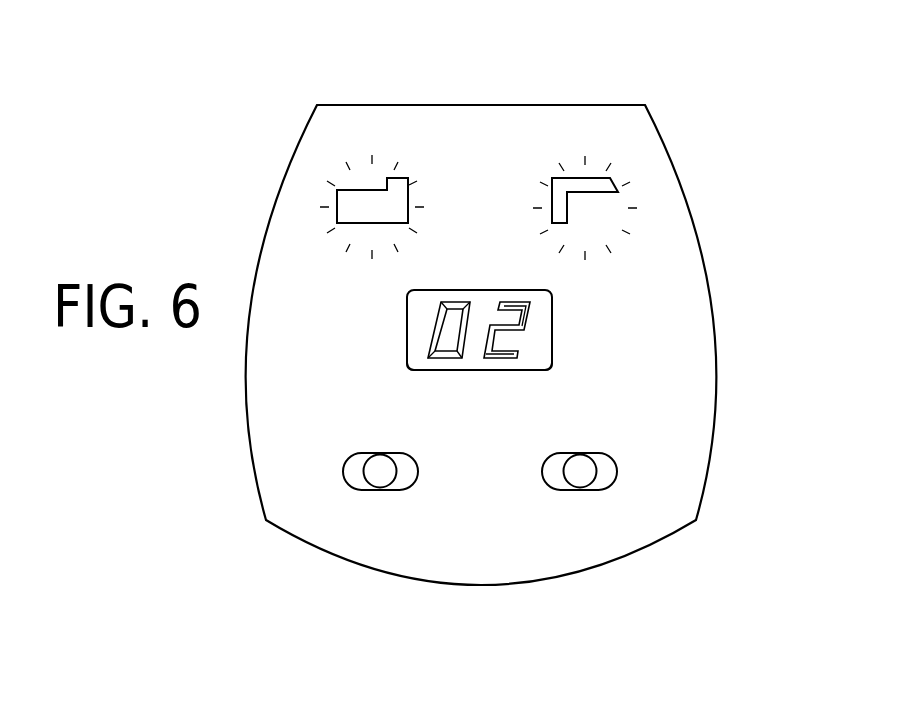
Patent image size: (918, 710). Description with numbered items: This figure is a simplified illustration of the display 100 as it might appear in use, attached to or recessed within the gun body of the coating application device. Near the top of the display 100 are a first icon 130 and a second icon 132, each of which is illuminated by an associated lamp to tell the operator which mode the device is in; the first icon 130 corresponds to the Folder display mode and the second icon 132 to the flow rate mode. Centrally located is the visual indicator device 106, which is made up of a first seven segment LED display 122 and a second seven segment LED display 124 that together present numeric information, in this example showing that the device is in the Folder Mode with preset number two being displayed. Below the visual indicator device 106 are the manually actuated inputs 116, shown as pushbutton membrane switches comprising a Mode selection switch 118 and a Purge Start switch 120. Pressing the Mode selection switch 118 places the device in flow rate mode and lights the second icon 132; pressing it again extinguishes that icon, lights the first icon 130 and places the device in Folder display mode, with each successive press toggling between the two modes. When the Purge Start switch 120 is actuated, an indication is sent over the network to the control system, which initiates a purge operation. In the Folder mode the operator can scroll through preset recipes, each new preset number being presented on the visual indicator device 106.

The display 100 is at (631, 60).
The first icon 130 is at (314, 179).
The second icon 132 is at (651, 180).
The visual indicator device 106 is at (394, 317).
The first seven segment LED display 122 is at (402, 391).
The second seven segment LED display 124 is at (560, 390).
The manually actuated inputs 116 is at (543, 435).
The Mode selection switch 118 is at (327, 493).
The Purge Start switch 120 is at (635, 493).